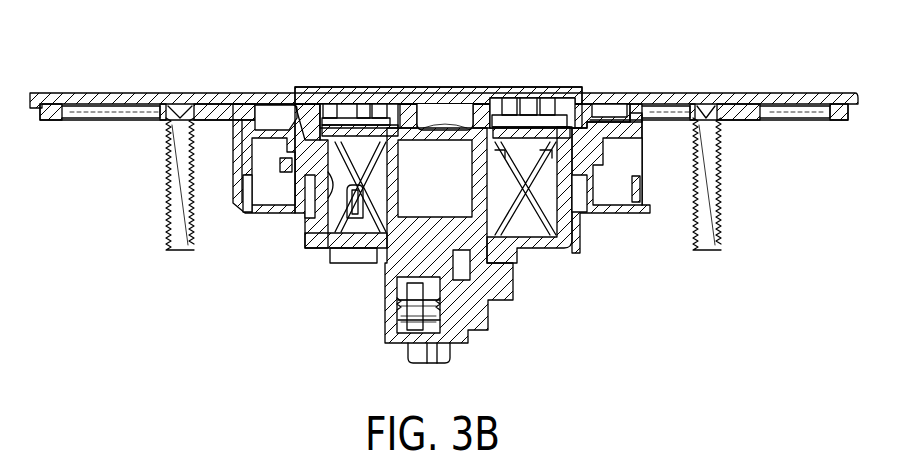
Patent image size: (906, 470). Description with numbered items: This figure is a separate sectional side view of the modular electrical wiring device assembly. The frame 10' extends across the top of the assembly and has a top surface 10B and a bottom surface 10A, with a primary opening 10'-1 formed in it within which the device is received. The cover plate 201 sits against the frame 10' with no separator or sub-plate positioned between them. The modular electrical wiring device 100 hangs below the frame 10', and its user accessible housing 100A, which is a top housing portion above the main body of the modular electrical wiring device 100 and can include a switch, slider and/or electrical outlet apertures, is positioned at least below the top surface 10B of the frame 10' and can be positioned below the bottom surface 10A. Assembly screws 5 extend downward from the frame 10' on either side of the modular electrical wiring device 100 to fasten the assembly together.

The top surface 10B is at (133, 93).
The bottom surface 10A is at (112, 122).
The frame 10' is at (719, 79).
The primary opening 10'-1 is at (601, 77).
The cover plate 201 is at (215, 97).
The user accessible housing 100A is at (418, 92).
The modular electrical wiring device 100 is at (515, 250).
The assembly screws 5 is at (172, 207).